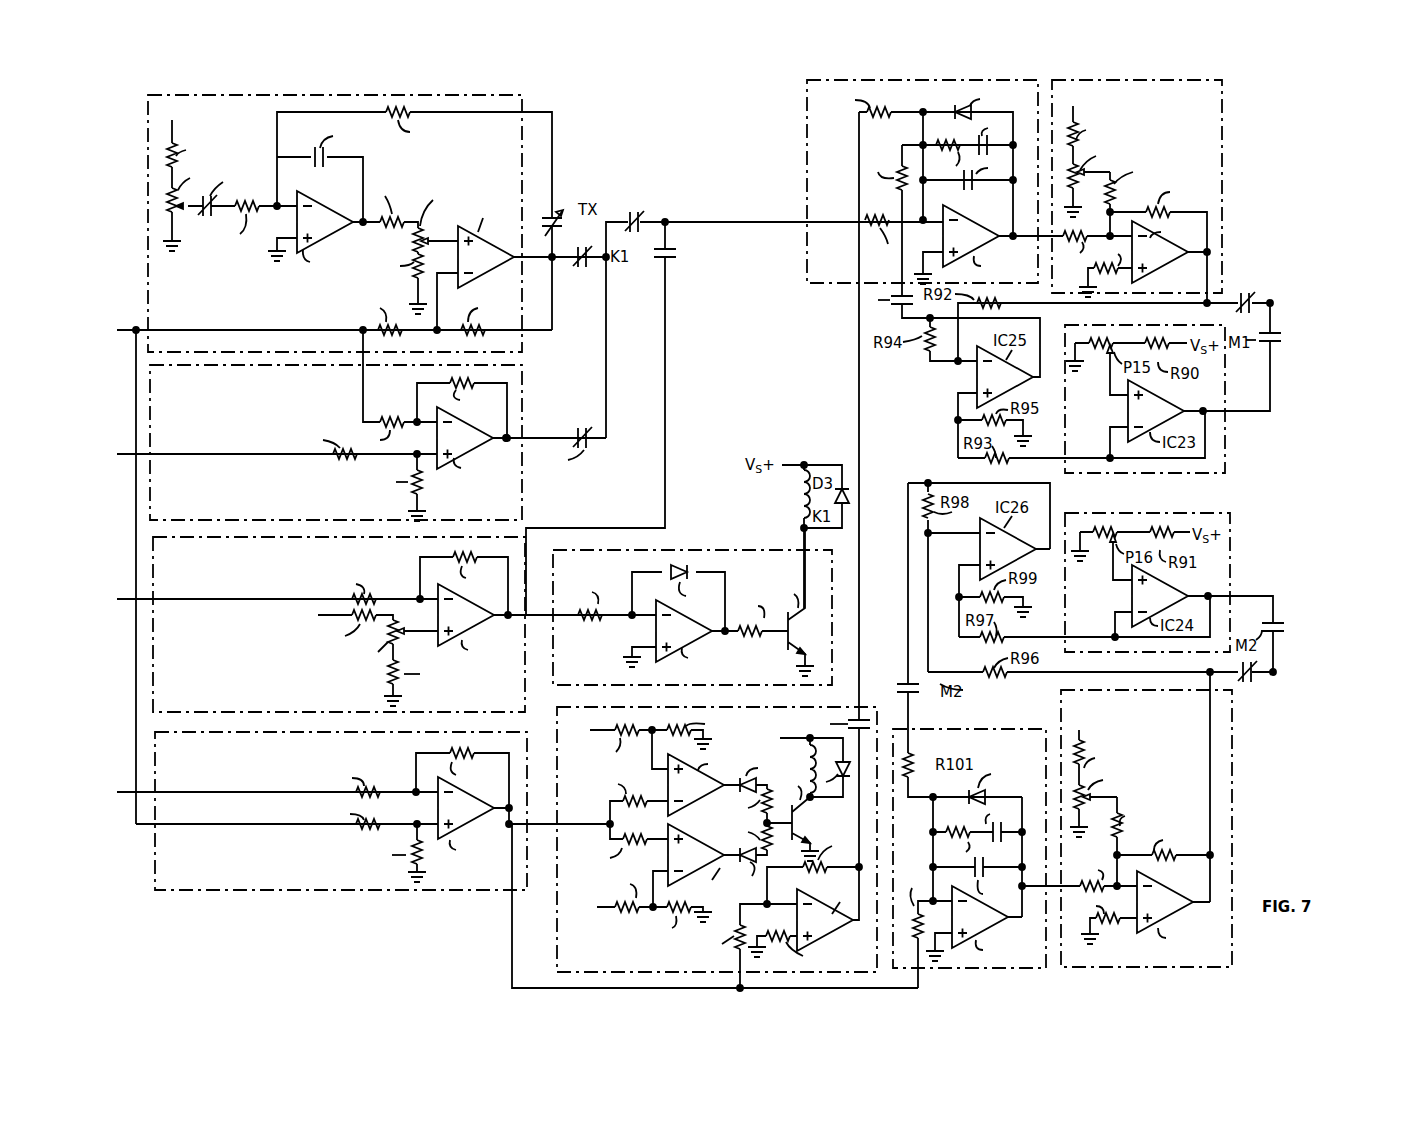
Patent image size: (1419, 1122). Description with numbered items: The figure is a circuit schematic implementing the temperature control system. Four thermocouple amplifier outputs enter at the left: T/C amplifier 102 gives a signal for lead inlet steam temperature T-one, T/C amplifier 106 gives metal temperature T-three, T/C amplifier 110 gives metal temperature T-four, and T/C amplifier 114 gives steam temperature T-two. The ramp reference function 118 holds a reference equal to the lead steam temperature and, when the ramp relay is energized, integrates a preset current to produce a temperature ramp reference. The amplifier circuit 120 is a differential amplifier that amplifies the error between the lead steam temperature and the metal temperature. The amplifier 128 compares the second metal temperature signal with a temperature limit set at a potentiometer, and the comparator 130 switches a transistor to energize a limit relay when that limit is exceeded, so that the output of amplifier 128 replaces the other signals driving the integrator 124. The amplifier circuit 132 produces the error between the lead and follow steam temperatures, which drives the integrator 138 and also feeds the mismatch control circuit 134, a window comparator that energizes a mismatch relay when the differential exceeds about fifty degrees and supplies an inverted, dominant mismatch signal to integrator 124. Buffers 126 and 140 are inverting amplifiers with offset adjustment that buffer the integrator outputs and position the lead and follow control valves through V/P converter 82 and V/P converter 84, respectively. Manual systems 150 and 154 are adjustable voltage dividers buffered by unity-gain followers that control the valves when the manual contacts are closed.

The T/C amplifier 102 is at (136, 330).
The T/C amplifier 106 is at (150, 454).
The T/C amplifier 110 is at (153, 599).
The T/C amplifier 114 is at (155, 792).
The ramp reference function 118 is at (524, 336).
The amplifier circuit 120 is at (524, 368).
The integrator 124 is at (806, 130).
The inverting amplifier circuit (buffer) 126 is at (1222, 128).
The amplifier 128 is at (524, 672).
The comparator 130 is at (706, 548).
The amplifier circuit 132 is at (524, 890).
The mismatch control circuit 134 is at (557, 956).
The integrator 138 is at (988, 728).
The inverting amplifier circuit (buffer) 140 is at (1233, 820).
The manual system 150 is at (1226, 462).
The manual system 154 is at (1232, 518).
The V/P converter 82 is at (1273, 303).
The V/P converter 84 is at (1273, 672).